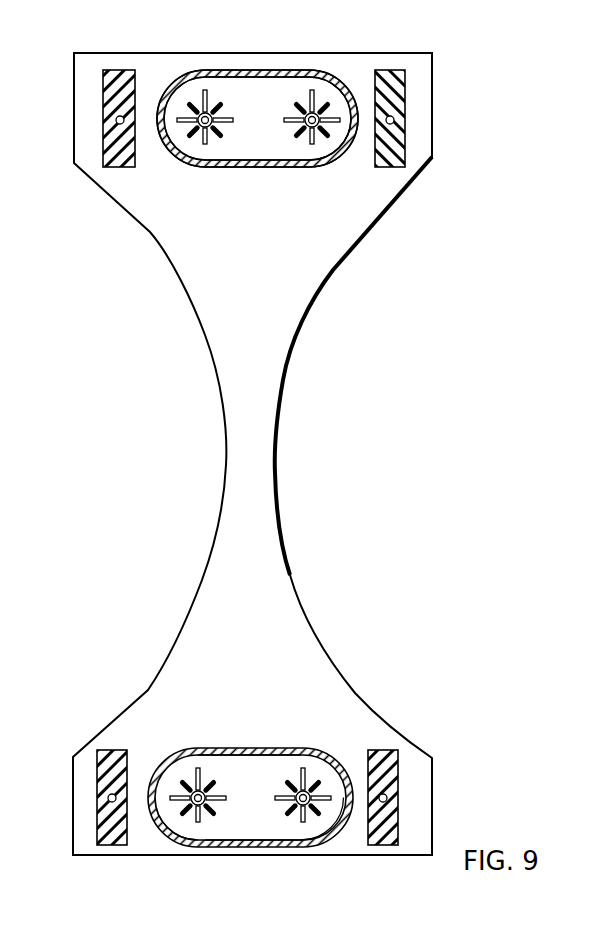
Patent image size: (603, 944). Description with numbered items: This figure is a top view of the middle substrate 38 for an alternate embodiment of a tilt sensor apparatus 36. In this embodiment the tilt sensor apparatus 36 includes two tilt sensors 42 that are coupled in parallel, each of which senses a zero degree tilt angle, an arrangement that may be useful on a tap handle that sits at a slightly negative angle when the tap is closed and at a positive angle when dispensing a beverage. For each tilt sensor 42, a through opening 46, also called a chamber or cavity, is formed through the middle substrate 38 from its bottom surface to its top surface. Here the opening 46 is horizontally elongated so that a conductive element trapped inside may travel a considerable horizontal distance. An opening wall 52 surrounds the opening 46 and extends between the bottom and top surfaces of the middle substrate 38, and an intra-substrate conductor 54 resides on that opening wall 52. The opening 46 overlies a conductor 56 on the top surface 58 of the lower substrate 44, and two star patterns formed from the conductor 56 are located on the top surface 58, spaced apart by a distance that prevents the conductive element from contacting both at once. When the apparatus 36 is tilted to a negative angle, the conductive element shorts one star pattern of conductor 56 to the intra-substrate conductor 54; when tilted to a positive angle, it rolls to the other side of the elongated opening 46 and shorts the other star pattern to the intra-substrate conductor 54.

The tilt sensor apparatus 36 is at (277, 420).
The middle substrate 38 is at (283, 370).
The tilt sensor 42 is at (314, 168).
The lower substrate 44 is at (325, 88).
The through opening 46 is at (247, 153).
The opening wall 52 is at (178, 82).
The intra-substrate conductor 54 is at (288, 77).
The conductor 56 is at (193, 150).
The top surface 58 is at (247, 82).